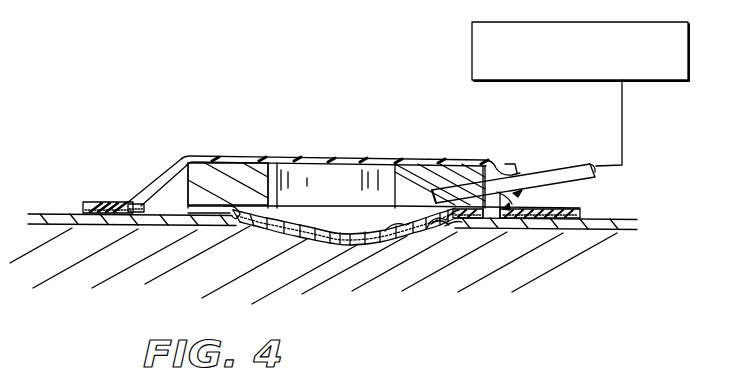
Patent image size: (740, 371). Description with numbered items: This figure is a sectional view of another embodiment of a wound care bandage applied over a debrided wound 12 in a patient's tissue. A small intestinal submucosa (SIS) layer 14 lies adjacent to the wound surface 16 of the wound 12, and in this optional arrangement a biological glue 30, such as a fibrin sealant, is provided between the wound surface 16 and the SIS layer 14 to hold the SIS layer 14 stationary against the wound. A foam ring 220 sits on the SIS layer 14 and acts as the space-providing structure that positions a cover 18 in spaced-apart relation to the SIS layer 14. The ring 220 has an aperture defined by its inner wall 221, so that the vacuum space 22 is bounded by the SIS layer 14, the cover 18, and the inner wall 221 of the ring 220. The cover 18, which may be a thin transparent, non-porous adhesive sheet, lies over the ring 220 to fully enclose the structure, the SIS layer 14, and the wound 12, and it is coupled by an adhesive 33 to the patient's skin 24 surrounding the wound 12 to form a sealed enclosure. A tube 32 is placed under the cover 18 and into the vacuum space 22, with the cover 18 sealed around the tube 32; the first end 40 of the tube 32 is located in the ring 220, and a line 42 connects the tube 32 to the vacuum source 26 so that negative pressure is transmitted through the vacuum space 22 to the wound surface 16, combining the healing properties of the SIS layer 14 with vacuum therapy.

The debrided wound 12 is at (448, 242).
The small intestinal submucosa (SIS) layer 14 is at (380, 180).
The wound surface 16 is at (416, 240).
The cover 18 is at (339, 232).
The vacuum space 22 is at (170, 192).
The skin 24 is at (60, 218).
The vacuum source 26 is at (539, 81).
The biological glue 30 is at (317, 246).
The tube 32 is at (569, 165).
The adhesive 33 is at (117, 205).
The first end of tube 40 is at (442, 192).
The vacuum line 42 is at (623, 112).
The foam ring 220 is at (215, 180).
The inner wall of the ring 221 is at (296, 172).